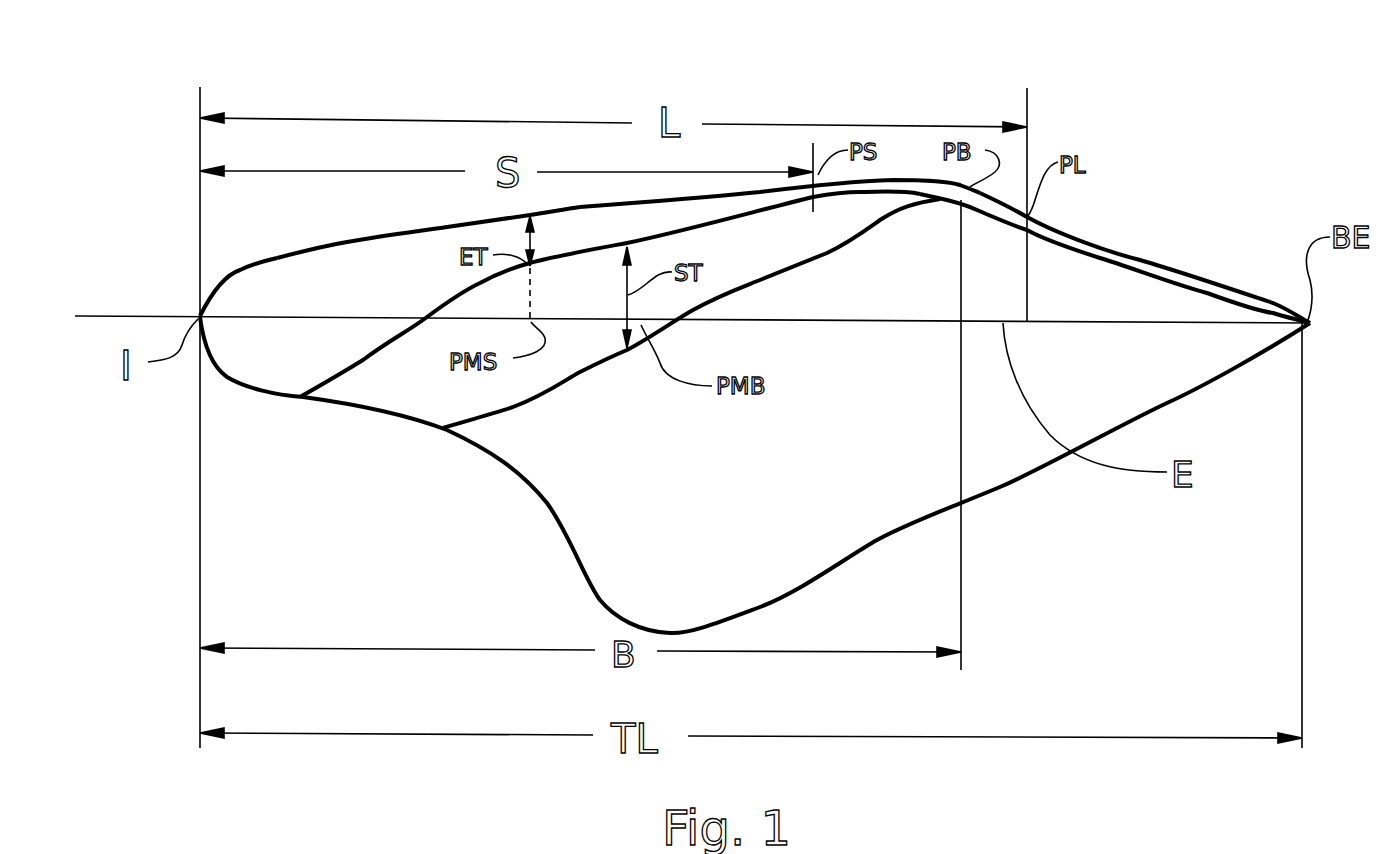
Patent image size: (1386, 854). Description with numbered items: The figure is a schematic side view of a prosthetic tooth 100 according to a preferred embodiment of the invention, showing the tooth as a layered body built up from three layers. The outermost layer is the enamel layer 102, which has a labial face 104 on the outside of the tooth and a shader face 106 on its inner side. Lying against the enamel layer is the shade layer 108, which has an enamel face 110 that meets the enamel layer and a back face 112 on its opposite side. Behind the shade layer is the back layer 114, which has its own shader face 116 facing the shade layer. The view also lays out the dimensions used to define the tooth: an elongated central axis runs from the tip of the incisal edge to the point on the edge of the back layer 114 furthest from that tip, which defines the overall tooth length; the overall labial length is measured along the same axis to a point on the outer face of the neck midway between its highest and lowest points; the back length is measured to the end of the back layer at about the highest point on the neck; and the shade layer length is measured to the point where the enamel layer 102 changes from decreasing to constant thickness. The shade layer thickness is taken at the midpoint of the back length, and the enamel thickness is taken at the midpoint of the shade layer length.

The prosthetic tooth 100 is at (1008, 490).
The enamel layer 102 is at (370, 265).
The labial face 104 is at (277, 258).
The shader face 106 is at (568, 256).
The shade layer 108 is at (787, 240).
The enamel face 110 is at (736, 228).
The back face 112 is at (897, 213).
The back layer 114 is at (1113, 293).
The shader face 116 is at (1073, 257).